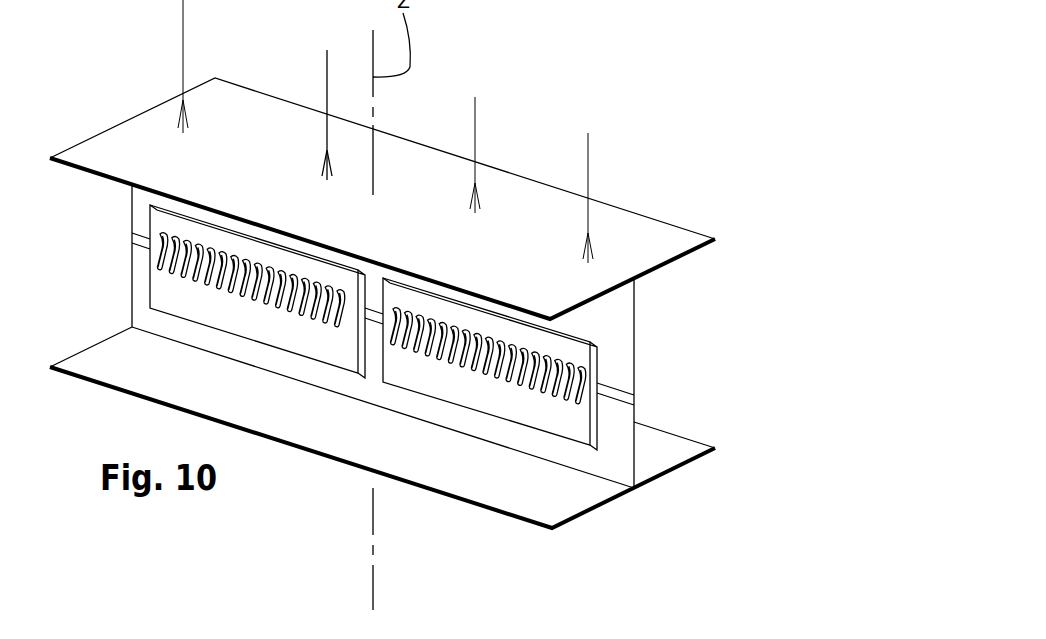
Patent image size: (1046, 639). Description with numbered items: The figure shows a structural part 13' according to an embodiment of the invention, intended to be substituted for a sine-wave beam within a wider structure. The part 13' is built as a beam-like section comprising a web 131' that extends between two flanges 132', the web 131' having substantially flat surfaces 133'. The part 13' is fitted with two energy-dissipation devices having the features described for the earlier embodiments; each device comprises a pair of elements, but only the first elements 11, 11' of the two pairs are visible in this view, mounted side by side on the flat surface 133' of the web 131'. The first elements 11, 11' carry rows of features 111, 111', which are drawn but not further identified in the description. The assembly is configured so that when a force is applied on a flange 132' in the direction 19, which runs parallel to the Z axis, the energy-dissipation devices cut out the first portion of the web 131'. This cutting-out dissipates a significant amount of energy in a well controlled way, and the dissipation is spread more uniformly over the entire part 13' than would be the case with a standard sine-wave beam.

The direction 19 is at (183, 33).
The structural part 13' is at (395, 198).
The web 131' is at (448, 336).
The flanges 132' is at (382, 467).
The substantially flat surfaces 133' is at (397, 454).
The first element 11 is at (257, 360).
The slots of the first insert panel 111 is at (251, 360).
The first element 11' is at (490, 416).
The slots of the second insert panel 111' is at (488, 424).